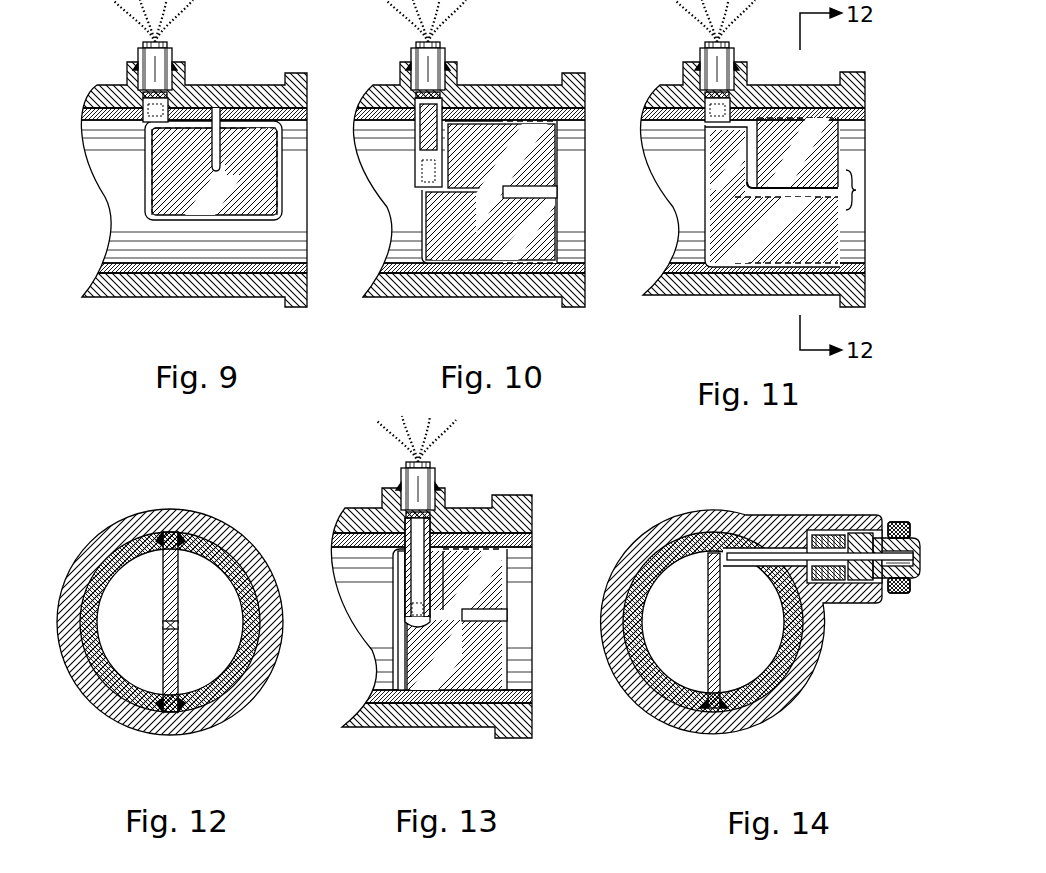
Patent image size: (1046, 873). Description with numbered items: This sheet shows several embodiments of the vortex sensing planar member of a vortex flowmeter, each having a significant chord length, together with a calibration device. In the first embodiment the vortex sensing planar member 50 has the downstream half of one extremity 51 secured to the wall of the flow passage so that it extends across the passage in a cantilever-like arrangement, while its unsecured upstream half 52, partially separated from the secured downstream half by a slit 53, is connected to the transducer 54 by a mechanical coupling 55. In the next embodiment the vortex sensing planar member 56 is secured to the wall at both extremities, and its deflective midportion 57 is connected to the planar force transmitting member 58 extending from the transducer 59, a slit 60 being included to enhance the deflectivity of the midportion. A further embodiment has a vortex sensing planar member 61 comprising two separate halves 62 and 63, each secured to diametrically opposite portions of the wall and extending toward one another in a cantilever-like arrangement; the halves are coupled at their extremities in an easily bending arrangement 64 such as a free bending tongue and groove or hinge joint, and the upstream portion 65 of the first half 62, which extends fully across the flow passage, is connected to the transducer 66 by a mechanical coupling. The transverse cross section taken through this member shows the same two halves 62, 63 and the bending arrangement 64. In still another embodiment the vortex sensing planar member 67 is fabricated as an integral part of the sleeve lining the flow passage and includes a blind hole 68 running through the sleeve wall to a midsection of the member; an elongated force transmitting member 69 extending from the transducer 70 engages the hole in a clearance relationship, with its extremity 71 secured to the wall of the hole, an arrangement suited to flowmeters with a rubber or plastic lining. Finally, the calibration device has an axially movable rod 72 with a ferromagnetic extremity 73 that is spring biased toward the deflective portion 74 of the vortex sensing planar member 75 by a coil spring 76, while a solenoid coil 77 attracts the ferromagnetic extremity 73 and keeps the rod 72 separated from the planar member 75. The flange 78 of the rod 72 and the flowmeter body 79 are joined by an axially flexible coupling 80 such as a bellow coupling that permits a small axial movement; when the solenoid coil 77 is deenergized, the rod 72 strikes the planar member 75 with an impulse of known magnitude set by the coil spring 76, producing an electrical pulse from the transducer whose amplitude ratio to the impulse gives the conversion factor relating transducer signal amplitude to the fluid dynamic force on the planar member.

In FIG. 9, the vortex sensing planar member 50 is at (185, 182).
In FIG. 9, the extremity 51 is at (238, 100).
In FIG. 9, the unsecured upstream half 52 is at (178, 140).
In FIG. 9, the slit 53 is at (245, 130).
In FIG. 9, the transducer 54 is at (148, 60).
In FIG. 9, the mechanical coupling 55 is at (145, 122).
In FIG. 10, the vortex sensing planar member 56 is at (480, 215).
In FIG. 10, the deflective midportion 57 is at (433, 197).
In FIG. 10, the planar force transmitting member 58 is at (427, 133).
In FIG. 10, the transducer 59 is at (432, 70).
In FIG. 10, the slit 60 is at (533, 175).
In FIG. 11, the vortex sensing planar member 61 is at (858, 190).
In FIG. 11, the first half 62 is at (767, 233).
In FIG. 12, the first half 62 is at (178, 657).
In FIG. 11, the second half 63 is at (805, 147).
In FIG. 12, the second half 63 is at (163, 587).
In FIG. 11, the easily bending arrangement 64 is at (793, 180).
In FIG. 12, the easily bending arrangement 64 is at (163, 627).
In FIG. 11, the upstream portion 65 is at (720, 167).
In FIG. 11, the transducer 66 is at (720, 72).
In FIG. 13, the vortex sensing planar member 67 is at (425, 657).
In FIG. 13, the blind hole 68 is at (460, 578).
In FIG. 13, the elongated force transmitting member 69 is at (438, 573).
In FIG. 13, the transducer 70 is at (420, 485).
In FIG. 13, the extremity 71 is at (465, 640).
In FIG. 14, the axially movable rod 72 is at (770, 548).
In FIG. 14, the ferromagnetic extremity 73 is at (915, 575).
In FIG. 14, the deflective portion 74 is at (705, 575).
In FIG. 14, the vortex sensing planar member 75 is at (668, 650).
In FIG. 14, the coil spring 76 is at (858, 532).
In FIG. 14, the solenoid coil 77 is at (900, 522).
In FIG. 14, the flange 78 is at (843, 583).
In FIG. 14, the flowmeter body 79 is at (775, 655).
In FIG. 14, the axially flexible coupling 80 is at (815, 540).